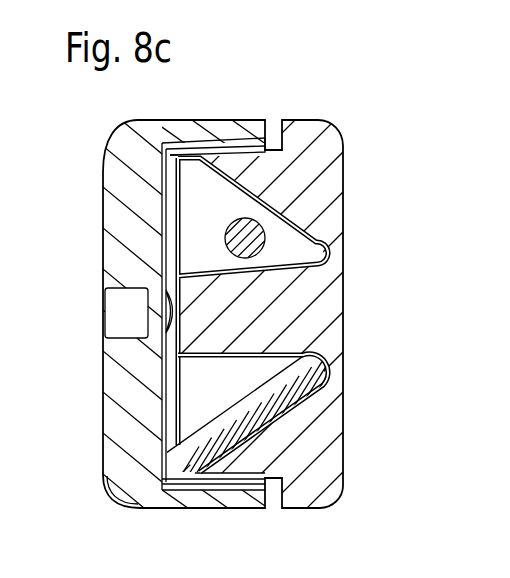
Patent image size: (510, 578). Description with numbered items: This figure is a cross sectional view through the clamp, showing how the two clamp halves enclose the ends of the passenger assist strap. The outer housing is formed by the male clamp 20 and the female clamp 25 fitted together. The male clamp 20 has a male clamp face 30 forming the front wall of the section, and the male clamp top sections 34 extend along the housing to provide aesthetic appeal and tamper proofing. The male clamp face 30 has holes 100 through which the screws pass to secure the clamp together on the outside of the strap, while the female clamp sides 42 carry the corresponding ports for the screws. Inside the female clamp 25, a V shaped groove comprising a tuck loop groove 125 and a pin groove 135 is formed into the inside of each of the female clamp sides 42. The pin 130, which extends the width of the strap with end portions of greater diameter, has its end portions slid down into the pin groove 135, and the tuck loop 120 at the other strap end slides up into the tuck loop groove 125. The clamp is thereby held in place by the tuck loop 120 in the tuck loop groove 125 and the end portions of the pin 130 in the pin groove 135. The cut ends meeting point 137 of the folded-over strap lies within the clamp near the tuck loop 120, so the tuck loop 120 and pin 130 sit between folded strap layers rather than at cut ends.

The male clamp 20 is at (108, 121).
The female clamp 25 is at (323, 114).
The male clamp face 30 is at (103, 172).
The male clamp top sections 34 is at (213, 130).
The female clamp sides 42 is at (238, 156).
The holes 100 is at (118, 308).
The tuck loop 120 is at (308, 397).
The tuck loop groove 125 is at (205, 395).
The pin 130 is at (268, 228).
The pin groove 135 is at (293, 252).
The cut ends meeting point 137 is at (232, 500).